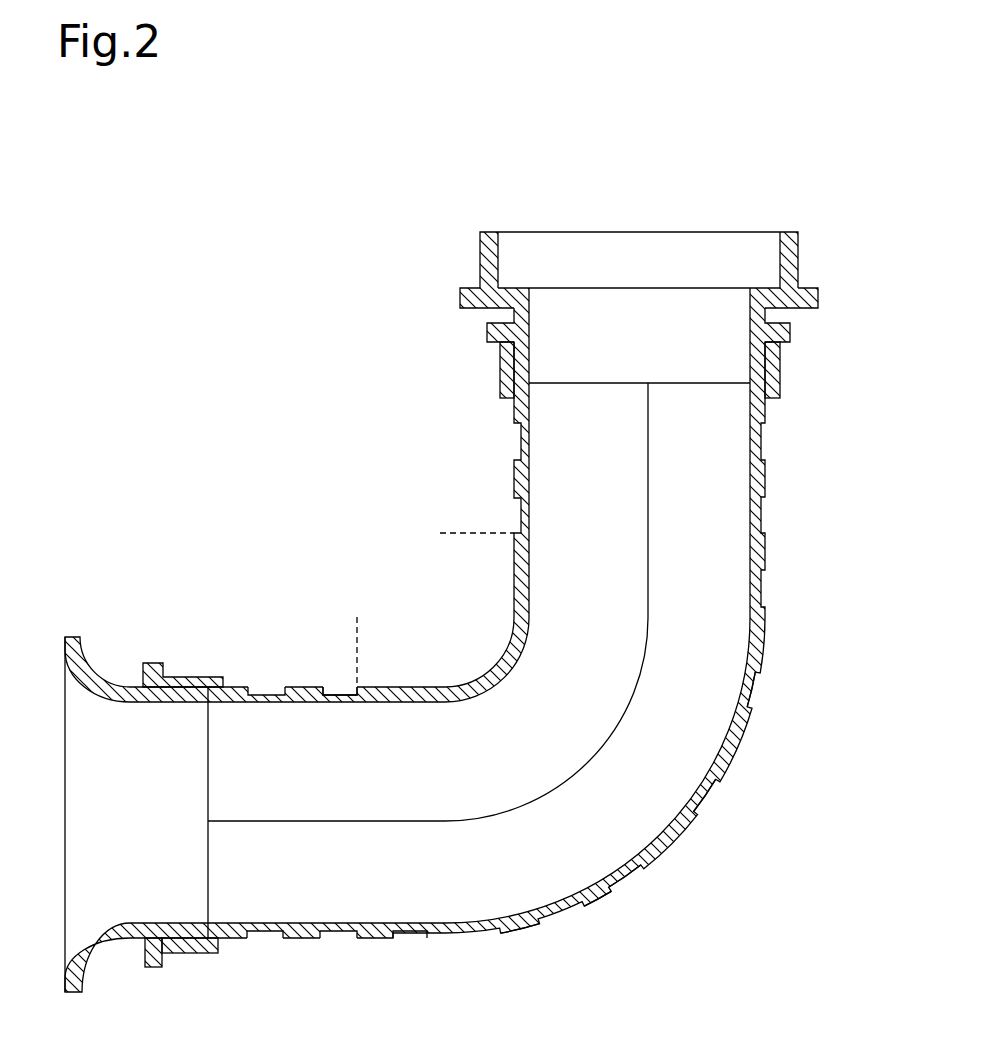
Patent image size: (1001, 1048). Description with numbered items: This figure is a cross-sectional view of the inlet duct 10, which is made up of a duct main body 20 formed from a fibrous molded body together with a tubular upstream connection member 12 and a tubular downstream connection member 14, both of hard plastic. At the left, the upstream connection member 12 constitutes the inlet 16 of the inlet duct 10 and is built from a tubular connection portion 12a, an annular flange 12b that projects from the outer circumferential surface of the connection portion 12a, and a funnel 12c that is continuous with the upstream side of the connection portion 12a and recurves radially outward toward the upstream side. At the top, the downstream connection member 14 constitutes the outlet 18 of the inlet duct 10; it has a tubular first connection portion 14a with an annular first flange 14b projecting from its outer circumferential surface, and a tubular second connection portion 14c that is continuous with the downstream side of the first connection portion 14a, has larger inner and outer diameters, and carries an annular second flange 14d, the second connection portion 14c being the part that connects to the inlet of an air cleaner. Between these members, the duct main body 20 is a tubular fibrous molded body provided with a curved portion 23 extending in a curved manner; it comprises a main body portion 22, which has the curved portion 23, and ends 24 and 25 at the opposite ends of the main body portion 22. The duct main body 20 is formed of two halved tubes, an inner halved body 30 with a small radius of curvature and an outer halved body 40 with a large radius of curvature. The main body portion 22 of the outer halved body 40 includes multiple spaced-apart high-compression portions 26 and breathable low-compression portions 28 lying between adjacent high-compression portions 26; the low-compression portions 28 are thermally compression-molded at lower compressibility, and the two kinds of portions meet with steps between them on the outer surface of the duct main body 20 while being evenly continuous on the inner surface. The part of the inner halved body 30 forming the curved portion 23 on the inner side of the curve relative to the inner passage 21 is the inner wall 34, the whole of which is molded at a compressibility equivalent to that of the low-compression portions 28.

The inlet duct 10 is at (166, 298).
The upstream connection member 12 is at (102, 648).
The connection portion 12a is at (198, 953).
The flange 12b is at (153, 970).
The funnel 12c is at (100, 960).
The downstream connection member 14 is at (461, 247).
The first connection portion 14a is at (780, 365).
The first flange 14b is at (790, 334).
The second connection portion 14c is at (798, 248).
The second flange 14d is at (818, 298).
The inlet 16 is at (93, 887).
The outlet 18 is at (709, 257).
The duct main body 20 is at (657, 863).
The inner passage 21 is at (373, 802).
The main body portion 22 is at (514, 437).
The curved portion 23 is at (580, 896).
The end 24 is at (185, 677).
The end 25 is at (500, 362).
The high-compression portion 26 is at (266, 695).
The low-compression portion 28 is at (302, 690).
The inner halved body 30 is at (336, 690).
The inner wall 34 is at (467, 536).
The outer halved body 40 is at (525, 912).